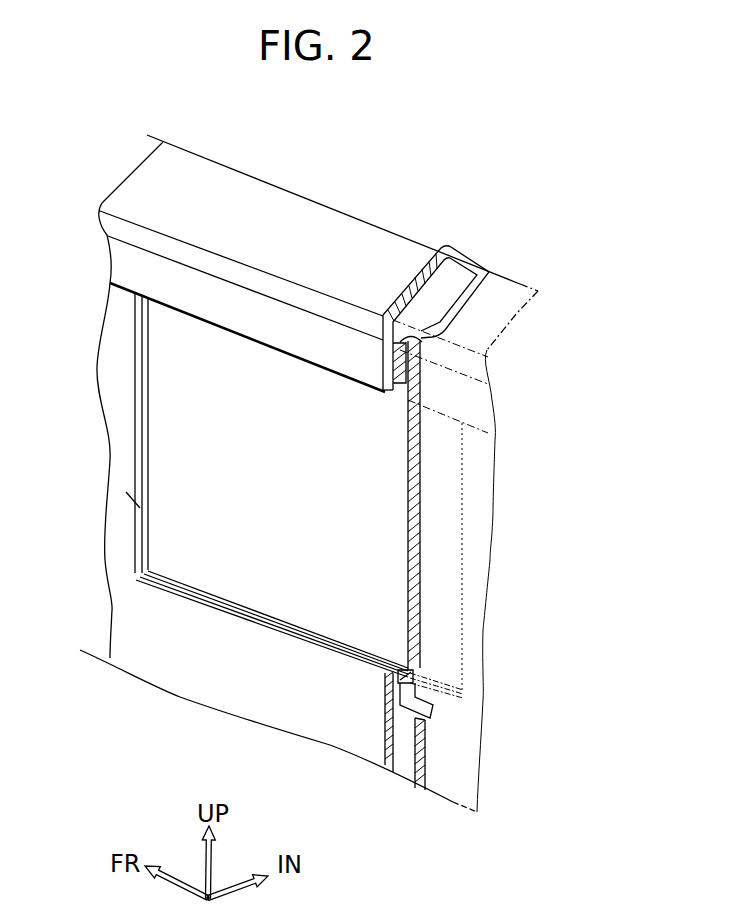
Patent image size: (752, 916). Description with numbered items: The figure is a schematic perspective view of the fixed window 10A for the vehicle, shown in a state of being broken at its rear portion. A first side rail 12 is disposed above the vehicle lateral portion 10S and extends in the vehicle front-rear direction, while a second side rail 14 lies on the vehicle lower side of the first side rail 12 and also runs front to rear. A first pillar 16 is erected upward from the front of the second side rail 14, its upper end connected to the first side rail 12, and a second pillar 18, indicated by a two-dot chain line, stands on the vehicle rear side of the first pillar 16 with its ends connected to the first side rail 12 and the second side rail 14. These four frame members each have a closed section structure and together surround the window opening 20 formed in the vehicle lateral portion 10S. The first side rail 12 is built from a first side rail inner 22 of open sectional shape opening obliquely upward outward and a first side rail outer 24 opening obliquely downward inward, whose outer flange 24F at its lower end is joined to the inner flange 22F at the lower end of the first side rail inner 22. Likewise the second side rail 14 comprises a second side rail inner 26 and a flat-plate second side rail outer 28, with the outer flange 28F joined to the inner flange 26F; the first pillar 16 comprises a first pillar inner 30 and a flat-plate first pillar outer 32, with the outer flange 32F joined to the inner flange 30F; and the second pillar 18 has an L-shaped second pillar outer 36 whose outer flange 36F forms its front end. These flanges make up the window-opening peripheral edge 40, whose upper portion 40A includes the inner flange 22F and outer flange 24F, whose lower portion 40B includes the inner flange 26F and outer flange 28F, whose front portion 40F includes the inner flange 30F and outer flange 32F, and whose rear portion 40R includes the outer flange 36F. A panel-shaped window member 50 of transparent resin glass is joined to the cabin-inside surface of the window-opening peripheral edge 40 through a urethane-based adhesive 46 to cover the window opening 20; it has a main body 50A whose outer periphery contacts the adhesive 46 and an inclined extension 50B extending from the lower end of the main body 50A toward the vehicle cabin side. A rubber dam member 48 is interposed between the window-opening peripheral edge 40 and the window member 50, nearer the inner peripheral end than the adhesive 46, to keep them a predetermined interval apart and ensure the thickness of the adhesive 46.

The first side rail 12 is at (293, 222).
The first side rail outer 24 is at (392, 262).
The outer flange 24F is at (312, 352).
The first side rail inner 22 is at (484, 321).
The inner flange 22F is at (404, 394).
The first pillar 16 is at (118, 348).
The second pillar 18 is at (481, 538).
The outer flange 36F is at (472, 593).
The second pillar outer 36 is at (535, 556).
The window-opening peripheral edge 40 is at (253, 320).
The upper portion 40A is at (287, 336).
The front portion 40F is at (125, 392).
The rear portion 40R is at (481, 485).
The lower portion 40B is at (190, 612).
The window opening 20 is at (232, 338).
The fixed window 10A is at (168, 425).
The vehicle lateral portion 10S is at (303, 702).
The second side rail 14 is at (207, 645).
The inner flange 30F is at (152, 460).
The first pillar inner 30 is at (207, 433).
The outer flange 32F is at (143, 505).
The first pillar outer 32 is at (197, 509).
The outer flange 28F is at (298, 650).
The inner flange 26F is at (330, 637).
The second side rail outer 28 is at (373, 732).
The second side rail inner 26 is at (430, 740).
The window member 50 is at (277, 590).
The main body 50A is at (420, 527).
The inclined extension 50B is at (431, 700).
The adhesive 46 is at (398, 362).
The dam member 48 is at (415, 381).